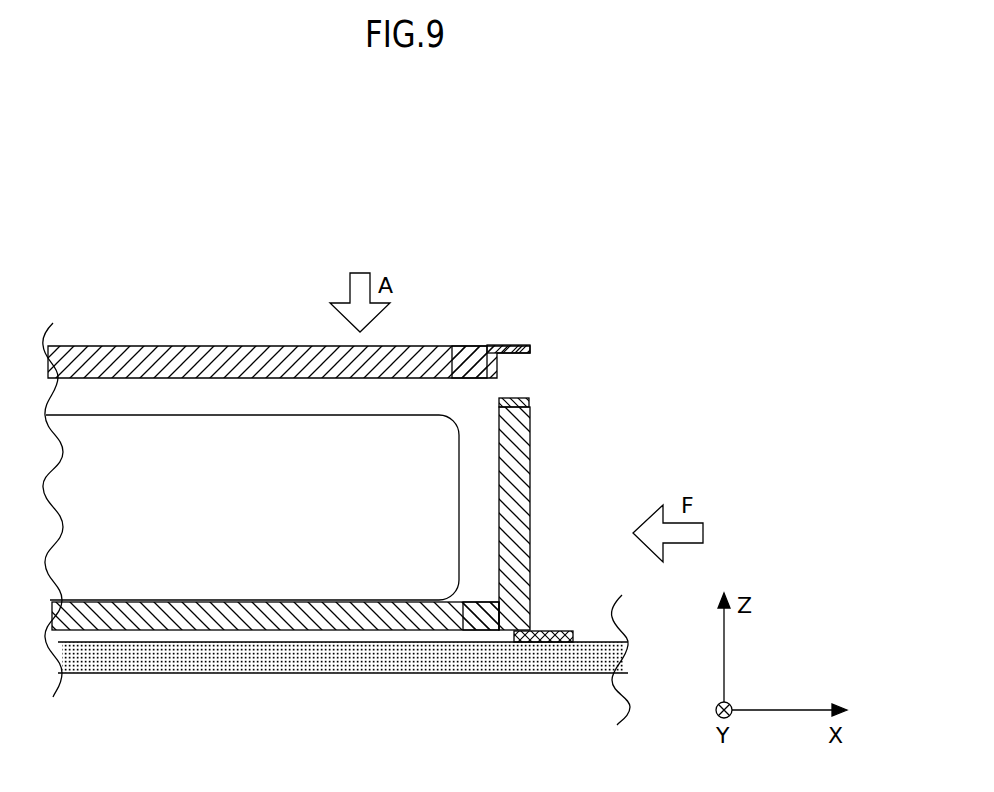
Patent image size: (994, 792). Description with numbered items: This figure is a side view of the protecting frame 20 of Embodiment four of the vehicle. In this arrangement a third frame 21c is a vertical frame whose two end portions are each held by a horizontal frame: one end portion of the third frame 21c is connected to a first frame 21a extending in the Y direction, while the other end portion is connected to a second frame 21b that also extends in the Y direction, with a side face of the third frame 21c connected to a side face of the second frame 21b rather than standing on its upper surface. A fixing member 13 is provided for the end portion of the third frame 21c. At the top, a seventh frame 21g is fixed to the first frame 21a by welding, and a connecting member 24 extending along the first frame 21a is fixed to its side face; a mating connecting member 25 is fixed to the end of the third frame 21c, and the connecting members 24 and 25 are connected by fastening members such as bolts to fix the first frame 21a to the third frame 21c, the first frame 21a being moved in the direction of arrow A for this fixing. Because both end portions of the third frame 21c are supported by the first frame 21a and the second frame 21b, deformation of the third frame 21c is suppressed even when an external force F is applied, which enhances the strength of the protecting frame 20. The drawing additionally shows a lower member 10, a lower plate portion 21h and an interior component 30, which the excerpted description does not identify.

The substrate 10 is at (388, 660).
The fixing member 13 is at (553, 632).
The protecting frame 20 is at (349, 497).
The first frame 21a is at (468, 357).
The second frame 21b is at (483, 617).
The third frame 21c is at (518, 465).
The seventh frame 21g is at (242, 362).
The lower plate portion 21h is at (203, 620).
The connecting member 24 is at (532, 347).
The connecting member 25 is at (528, 400).
The electronic component 30 is at (141, 462).